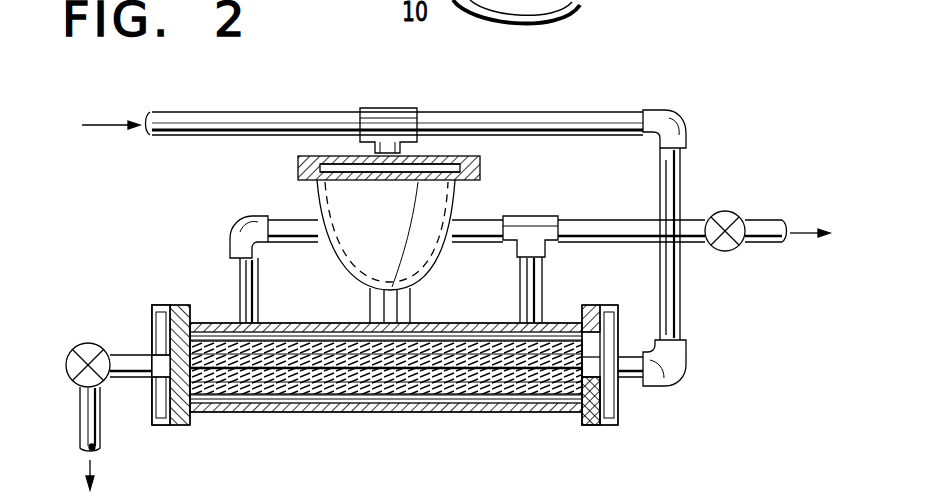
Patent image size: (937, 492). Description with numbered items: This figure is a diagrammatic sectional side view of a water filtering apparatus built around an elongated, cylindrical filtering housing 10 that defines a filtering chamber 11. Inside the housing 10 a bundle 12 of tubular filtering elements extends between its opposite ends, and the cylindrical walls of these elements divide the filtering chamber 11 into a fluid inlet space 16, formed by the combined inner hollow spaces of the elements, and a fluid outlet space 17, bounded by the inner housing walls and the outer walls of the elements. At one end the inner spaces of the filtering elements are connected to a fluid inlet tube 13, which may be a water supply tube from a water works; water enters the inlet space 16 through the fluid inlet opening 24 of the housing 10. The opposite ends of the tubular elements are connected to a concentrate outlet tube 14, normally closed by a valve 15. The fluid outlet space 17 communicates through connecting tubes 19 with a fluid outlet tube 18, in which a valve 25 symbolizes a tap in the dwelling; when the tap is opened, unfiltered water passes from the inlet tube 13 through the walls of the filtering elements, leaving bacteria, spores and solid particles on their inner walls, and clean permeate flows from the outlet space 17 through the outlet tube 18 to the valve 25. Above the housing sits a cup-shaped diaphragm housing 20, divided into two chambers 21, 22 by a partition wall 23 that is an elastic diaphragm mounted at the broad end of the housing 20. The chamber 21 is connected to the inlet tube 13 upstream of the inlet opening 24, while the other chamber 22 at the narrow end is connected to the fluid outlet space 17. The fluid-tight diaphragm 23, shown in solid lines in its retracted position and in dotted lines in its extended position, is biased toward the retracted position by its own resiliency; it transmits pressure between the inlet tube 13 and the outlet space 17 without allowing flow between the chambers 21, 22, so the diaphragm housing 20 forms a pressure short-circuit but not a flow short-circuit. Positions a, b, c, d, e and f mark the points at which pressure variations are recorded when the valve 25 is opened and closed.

The filtering housing 10 is at (280, 412).
The filtering chamber 11 is at (487, 376).
The bundle of tubular filtering elements 12 is at (298, 325).
The fluid inlet tube 13 is at (668, 277).
The concentrate outlet tube 14 is at (85, 408).
The valve 15 is at (74, 342).
The fluid inlet space 16 is at (487, 324).
The fluid outlet space 17 is at (382, 401).
The fluid outlet tube 18 is at (602, 236).
The connecting tubes 19 is at (240, 268).
The diaphragm housing 20 is at (432, 210).
The chamber 21 is at (318, 182).
The chamber 22 is at (355, 196).
The partition wall / diaphragm 23 is at (385, 183).
The fluid inlet opening 24 is at (630, 370).
The valve 25 is at (725, 220).
The position a is at (400, 312).
The position b is at (237, 322).
The position c is at (622, 356).
The position d is at (536, 306).
The position e is at (390, 148).
The position f is at (138, 345).